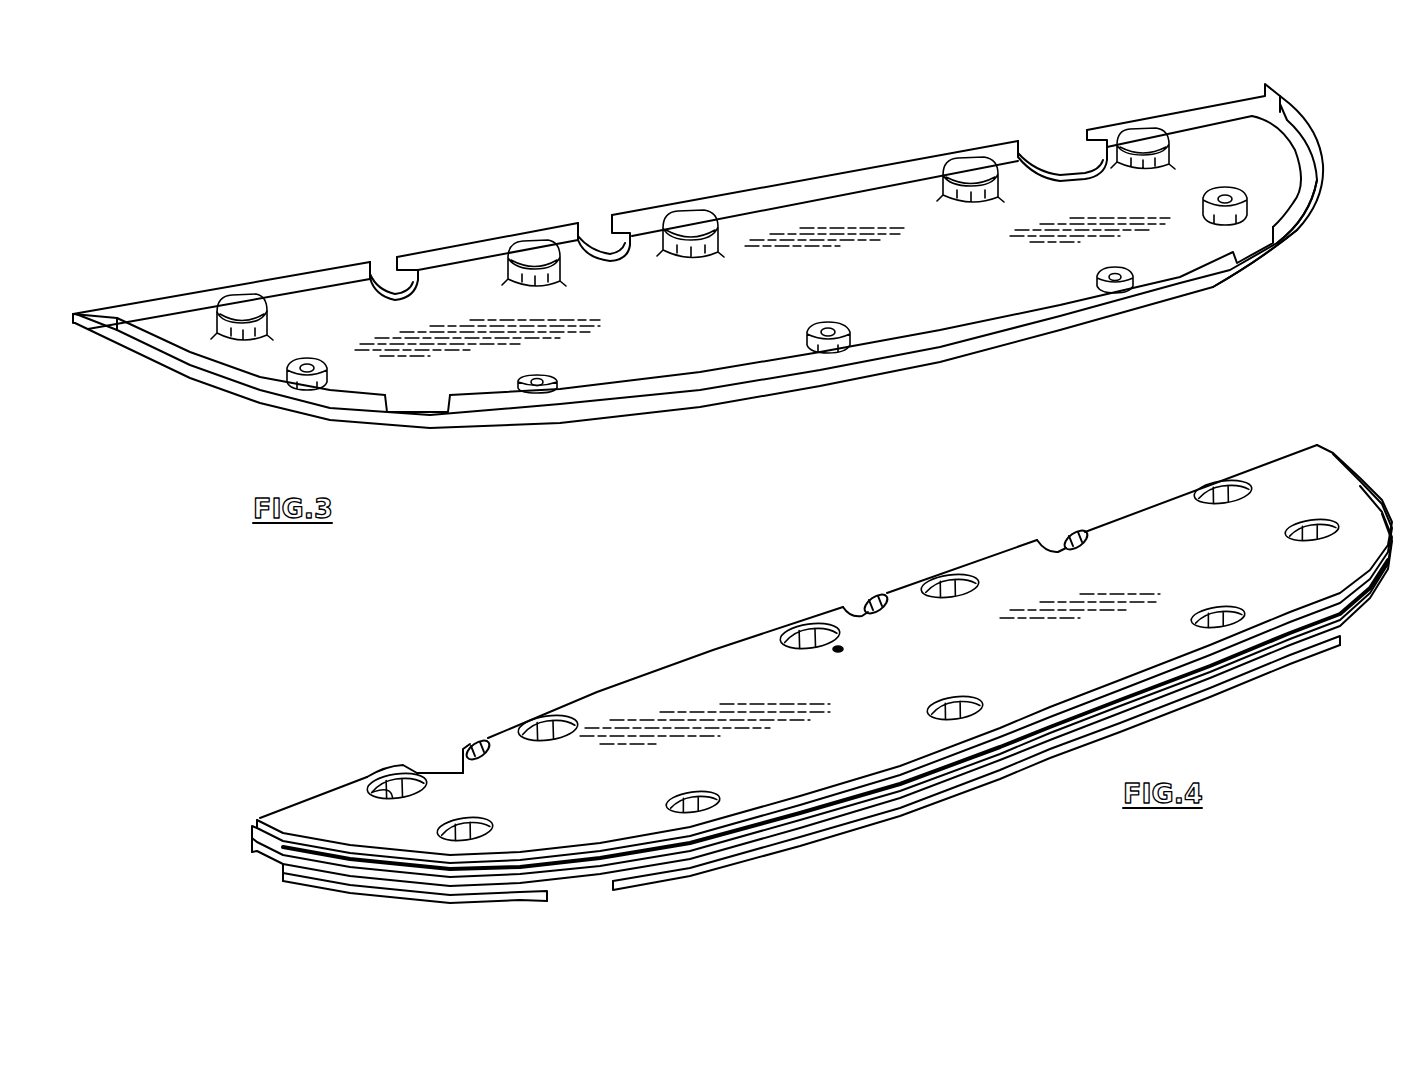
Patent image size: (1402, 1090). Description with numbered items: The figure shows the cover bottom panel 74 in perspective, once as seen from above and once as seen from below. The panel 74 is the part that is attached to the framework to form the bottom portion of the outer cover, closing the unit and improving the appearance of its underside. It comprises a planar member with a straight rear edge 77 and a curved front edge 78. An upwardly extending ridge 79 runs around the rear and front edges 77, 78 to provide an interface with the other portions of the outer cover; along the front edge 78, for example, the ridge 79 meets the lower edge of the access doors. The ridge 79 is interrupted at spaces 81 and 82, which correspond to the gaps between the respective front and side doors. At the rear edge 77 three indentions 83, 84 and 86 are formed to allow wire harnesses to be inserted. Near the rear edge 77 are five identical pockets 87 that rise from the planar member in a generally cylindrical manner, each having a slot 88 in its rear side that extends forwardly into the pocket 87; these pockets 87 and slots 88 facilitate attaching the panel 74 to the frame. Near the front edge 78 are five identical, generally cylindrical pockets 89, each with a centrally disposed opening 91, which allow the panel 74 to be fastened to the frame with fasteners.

In FIG. 3, the bottom panel 74 is at (711, 275).
In FIG. 4, the bottom panel 74 is at (817, 674).
In FIG. 3, the rear edge 77 is at (687, 198).
In FIG. 4, the rear edge 77 is at (788, 631).
In FIG. 3, the front edge 78 is at (698, 289).
In FIG. 4, the front edge 78 is at (930, 797).
In FIG. 3, the ridge 79 is at (305, 375).
In FIG. 4, the ridge 79 is at (455, 828).
In FIG. 3, the space 81 is at (420, 425).
In FIG. 3, the space 82 is at (1282, 270).
In FIG. 3, the indention 83 is at (375, 248).
In FIG. 4, the indention 83 is at (1057, 532).
In FIG. 3, the indention 84 is at (607, 228).
In FIG. 4, the indention 84 is at (860, 600).
In FIG. 3, the indention 86 is at (1057, 134).
In FIG. 4, the indention 86 is at (417, 735).
In FIG. 3, the pocket 87 is at (232, 300).
In FIG. 4, the pocket 87 is at (395, 790).
In FIG. 3, the slot 88 is at (173, 276).
In FIG. 4, the slot 88 is at (335, 772).
In FIG. 3, the pocket 89 is at (815, 333).
In FIG. 4, the pocket 89 is at (950, 703).
In FIG. 3, the opening 91 is at (1103, 278).